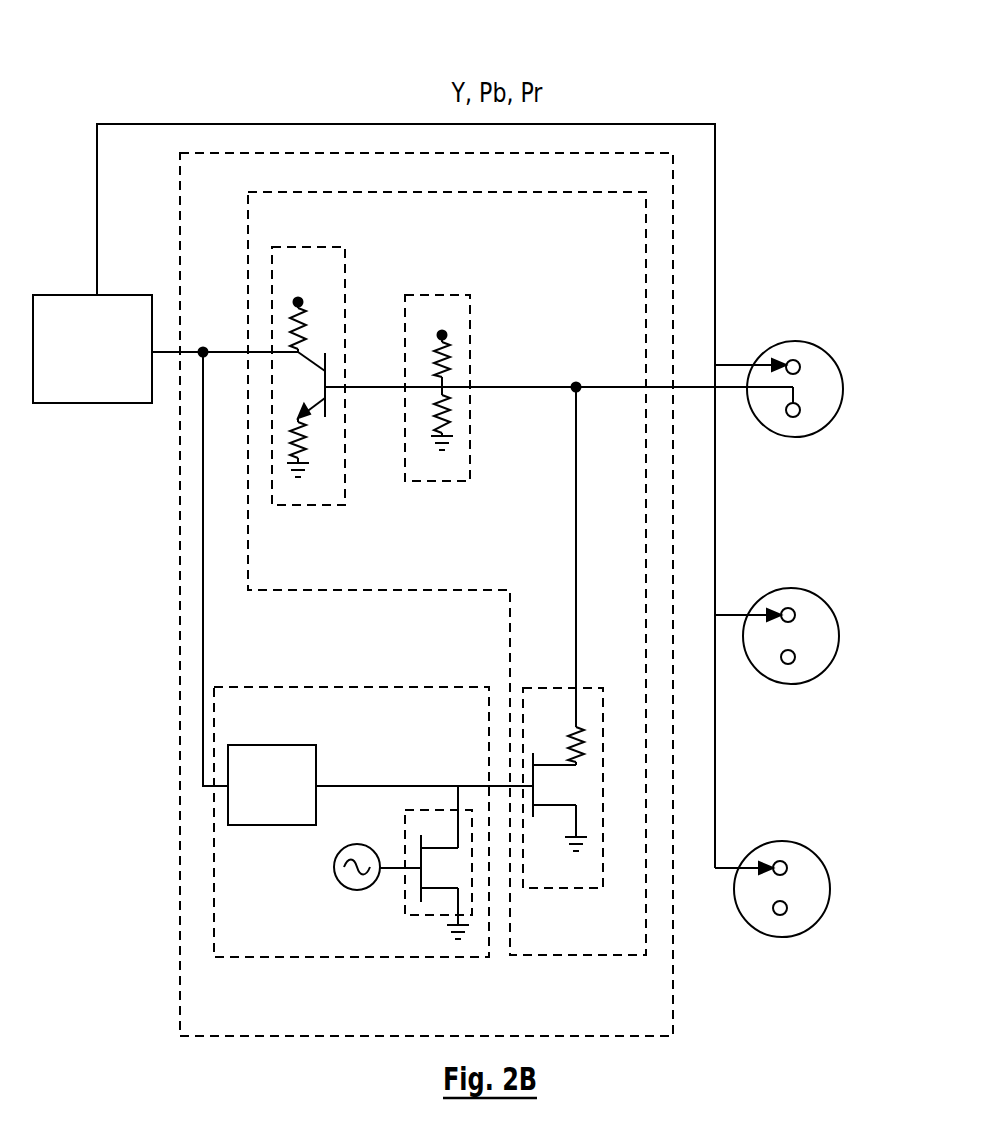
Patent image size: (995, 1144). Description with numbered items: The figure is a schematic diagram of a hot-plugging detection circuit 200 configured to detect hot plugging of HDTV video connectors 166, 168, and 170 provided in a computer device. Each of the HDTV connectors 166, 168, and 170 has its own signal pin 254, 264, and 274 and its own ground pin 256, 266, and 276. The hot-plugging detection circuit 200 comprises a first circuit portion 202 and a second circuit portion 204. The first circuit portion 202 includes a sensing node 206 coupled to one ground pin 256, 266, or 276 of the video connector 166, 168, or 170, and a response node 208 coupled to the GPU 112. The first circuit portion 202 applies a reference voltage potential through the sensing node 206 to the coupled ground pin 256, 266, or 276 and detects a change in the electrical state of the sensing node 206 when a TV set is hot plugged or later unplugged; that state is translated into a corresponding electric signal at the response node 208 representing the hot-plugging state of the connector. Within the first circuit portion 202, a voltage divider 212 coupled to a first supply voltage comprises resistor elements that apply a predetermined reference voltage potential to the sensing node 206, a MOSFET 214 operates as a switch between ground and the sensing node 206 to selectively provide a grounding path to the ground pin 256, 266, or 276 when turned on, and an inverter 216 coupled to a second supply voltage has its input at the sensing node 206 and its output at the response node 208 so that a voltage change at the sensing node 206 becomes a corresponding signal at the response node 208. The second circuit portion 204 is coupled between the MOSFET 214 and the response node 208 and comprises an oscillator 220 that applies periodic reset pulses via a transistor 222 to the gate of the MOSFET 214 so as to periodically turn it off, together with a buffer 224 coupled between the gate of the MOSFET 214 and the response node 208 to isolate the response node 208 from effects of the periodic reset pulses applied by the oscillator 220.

The GPU 112 is at (92, 349).
The hot-plugging detection circuit 200 is at (426, 594).
The first circuit portion 202 is at (447, 573).
The second circuit portion 204 is at (351, 822).
The sensing node 206 is at (596, 365).
The response node 208 is at (205, 347).
The voltage divider 212 is at (456, 277).
The MOSFET 214 is at (585, 687).
The inverter 216 is at (325, 228).
The oscillator 220 is at (362, 845).
The transistor 222 is at (418, 809).
The buffer 224 is at (270, 744).
The HDTV video connector 166 is at (797, 391).
The HDTV video connector 168 is at (796, 640).
The HDTV video connector 170 is at (791, 893).
The signal pin 254 is at (845, 332).
The ground pin 256 is at (776, 445).
The signal pin 264 is at (840, 580).
The ground pin 266 is at (771, 694).
The signal pin 274 is at (830, 832).
The ground pin 276 is at (763, 946).